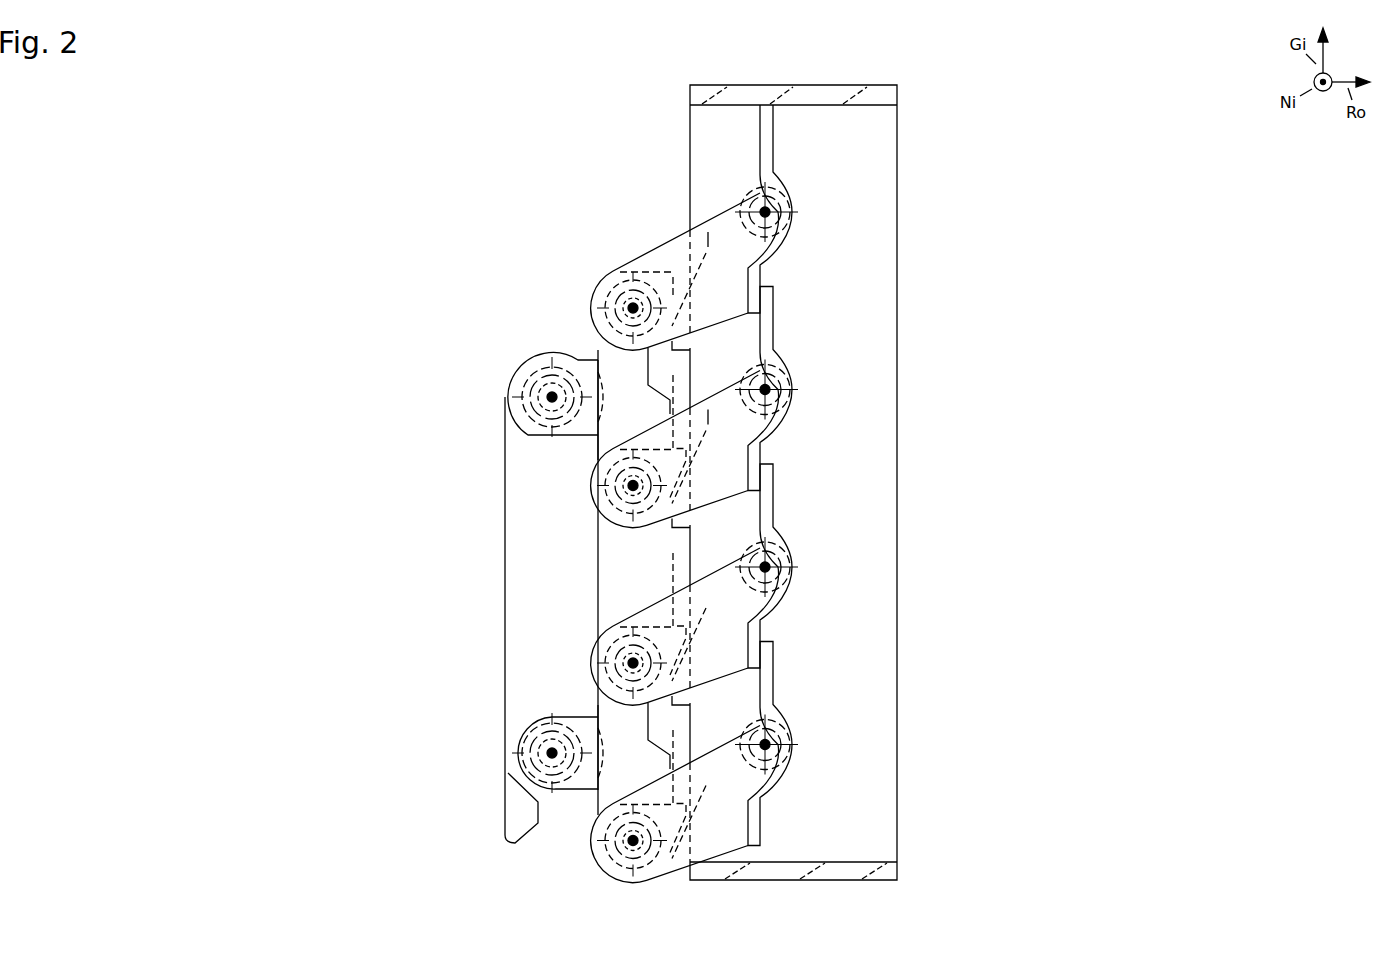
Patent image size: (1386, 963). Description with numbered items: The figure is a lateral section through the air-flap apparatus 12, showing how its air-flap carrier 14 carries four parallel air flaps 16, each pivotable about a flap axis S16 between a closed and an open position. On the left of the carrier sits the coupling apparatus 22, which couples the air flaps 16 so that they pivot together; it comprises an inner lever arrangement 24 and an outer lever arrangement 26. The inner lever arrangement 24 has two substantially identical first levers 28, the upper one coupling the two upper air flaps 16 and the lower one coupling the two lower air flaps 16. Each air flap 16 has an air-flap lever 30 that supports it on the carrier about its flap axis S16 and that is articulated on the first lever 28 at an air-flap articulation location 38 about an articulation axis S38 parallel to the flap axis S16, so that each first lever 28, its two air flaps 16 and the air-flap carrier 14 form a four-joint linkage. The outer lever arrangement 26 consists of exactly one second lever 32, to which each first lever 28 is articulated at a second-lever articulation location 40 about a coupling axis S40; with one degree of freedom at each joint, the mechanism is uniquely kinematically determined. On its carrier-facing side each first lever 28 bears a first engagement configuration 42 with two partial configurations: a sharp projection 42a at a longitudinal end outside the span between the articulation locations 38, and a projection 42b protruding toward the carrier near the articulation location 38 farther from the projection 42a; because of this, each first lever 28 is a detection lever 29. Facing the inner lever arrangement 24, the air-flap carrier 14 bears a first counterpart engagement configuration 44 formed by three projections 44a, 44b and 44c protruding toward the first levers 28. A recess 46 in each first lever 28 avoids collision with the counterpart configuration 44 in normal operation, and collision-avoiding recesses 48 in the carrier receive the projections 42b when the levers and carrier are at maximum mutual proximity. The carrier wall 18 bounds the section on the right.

The air-flap apparatus 12 is at (402, 146).
The air-flap carrier 14 is at (897, 864).
The air flap 16 is at (768, 124).
The frame 18 is at (820, 540).
The coupling apparatus 22 is at (507, 200).
The inner lever arrangement 24 is at (612, 243).
The outer lever arrangement 26 is at (522, 328).
The first lever 28 is at (601, 372).
The detection lever 29 is at (602, 398).
The air-flap lever 30 is at (672, 299).
The second lever 32 is at (537, 560).
The air-flap articulation location 38 is at (612, 300).
The second-lever articulation location 40 is at (532, 381).
The first engagement configuration 42 is at (677, 255).
The first partial engagement configuration 42a is at (668, 628).
The second partial engagement configuration 42b is at (678, 818).
The first counterpart engagement configuration 44 is at (713, 314).
The first partial counterpart engagement configuration 44a is at (680, 341).
The first partial counterpart engagement configuration 44b is at (680, 519).
The first partial counterpart engagement configuration 44c is at (680, 697).
The recess 46 is at (648, 384).
The collision-avoiding recess 48 is at (685, 257).
The flap axis S16 is at (765, 212).
The articulation axis S38 is at (633, 308).
The coupling axis S40 is at (552, 397).